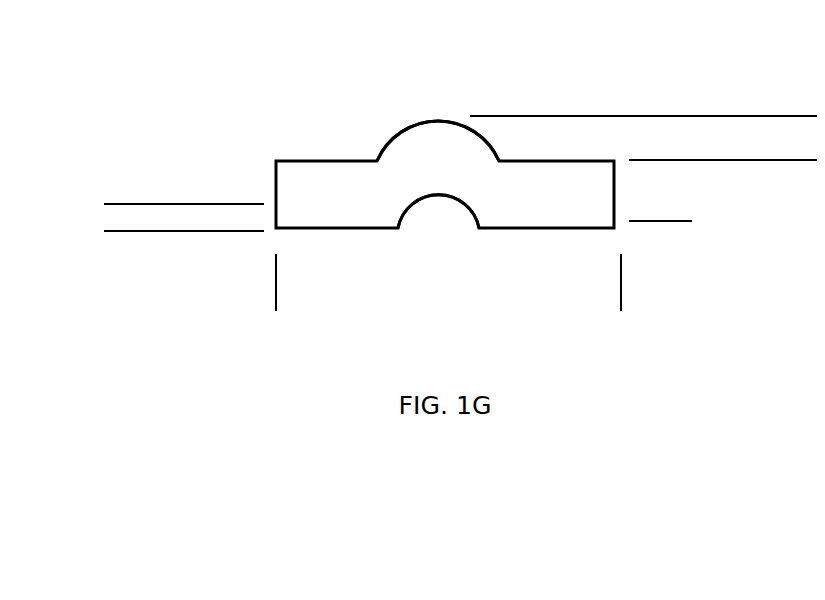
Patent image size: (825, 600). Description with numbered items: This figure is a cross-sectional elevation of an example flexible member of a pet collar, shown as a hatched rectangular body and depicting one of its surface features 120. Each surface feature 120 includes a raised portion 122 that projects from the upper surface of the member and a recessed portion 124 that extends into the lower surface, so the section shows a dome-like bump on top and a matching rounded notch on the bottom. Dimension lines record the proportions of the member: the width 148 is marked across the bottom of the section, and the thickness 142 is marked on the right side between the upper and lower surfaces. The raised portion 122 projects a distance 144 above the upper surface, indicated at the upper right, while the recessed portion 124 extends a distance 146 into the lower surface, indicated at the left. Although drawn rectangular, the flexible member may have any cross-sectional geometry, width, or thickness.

The surface feature 120 is at (447, 107).
The raised portion 122 is at (402, 124).
The recessed portion 124 is at (418, 197).
The thickness 142 is at (654, 120).
The distance 144 is at (719, 52).
The distance 146 is at (170, 138).
The width 148 is at (610, 282).